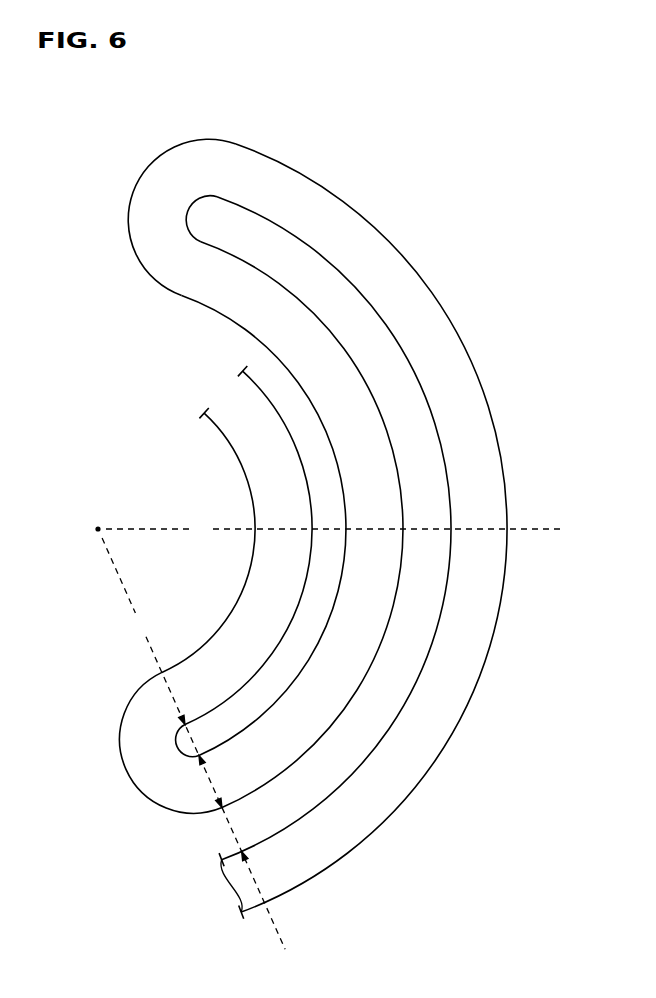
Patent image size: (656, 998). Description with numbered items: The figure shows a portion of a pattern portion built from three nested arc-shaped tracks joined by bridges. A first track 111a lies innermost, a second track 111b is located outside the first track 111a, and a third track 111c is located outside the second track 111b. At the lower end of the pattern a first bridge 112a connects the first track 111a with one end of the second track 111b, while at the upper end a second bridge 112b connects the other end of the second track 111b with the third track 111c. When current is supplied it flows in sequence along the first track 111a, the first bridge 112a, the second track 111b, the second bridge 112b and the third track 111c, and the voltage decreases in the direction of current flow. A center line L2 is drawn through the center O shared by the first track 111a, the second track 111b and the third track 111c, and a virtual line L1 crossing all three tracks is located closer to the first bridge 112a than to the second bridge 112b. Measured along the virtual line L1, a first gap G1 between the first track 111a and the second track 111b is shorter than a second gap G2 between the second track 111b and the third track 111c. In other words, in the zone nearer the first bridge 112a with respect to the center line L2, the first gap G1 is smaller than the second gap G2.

The first track 111a is at (243, 371).
The second track 111b is at (220, 293).
The third track 111c is at (480, 398).
The first bridge 112a is at (132, 758).
The second bridge 112b is at (172, 168).
The center O is at (96, 516).
The virtual line L1 is at (193, 743).
The center line L2 is at (333, 530).
The first gap G1 is at (198, 740).
The second gap G2 is at (236, 829).